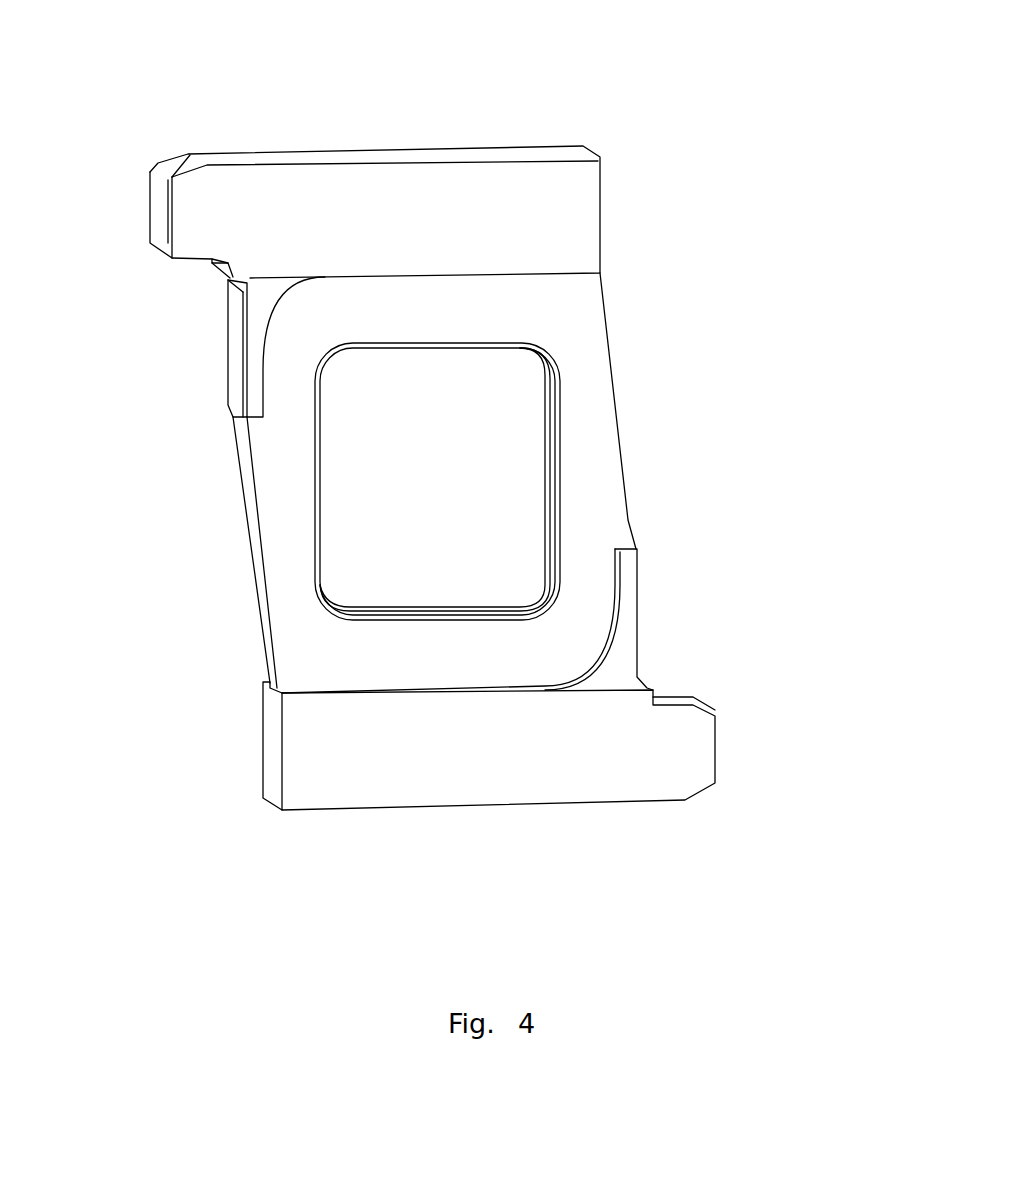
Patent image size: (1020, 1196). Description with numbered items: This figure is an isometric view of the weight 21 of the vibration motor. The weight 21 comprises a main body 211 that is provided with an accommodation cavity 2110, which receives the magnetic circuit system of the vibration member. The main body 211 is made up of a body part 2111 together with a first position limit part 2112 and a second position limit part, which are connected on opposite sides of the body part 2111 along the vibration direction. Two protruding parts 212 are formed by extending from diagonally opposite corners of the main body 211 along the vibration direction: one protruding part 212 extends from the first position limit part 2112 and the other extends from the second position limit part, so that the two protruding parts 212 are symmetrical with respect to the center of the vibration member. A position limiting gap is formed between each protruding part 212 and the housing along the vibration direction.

The weight 21 is at (486, 43).
The main body 211 is at (868, 605).
The accommodation cavity 2110 is at (363, 438).
The body part 2111 is at (600, 477).
The first position limit part 2112 is at (582, 222).
The protruding part 212 is at (192, 215).